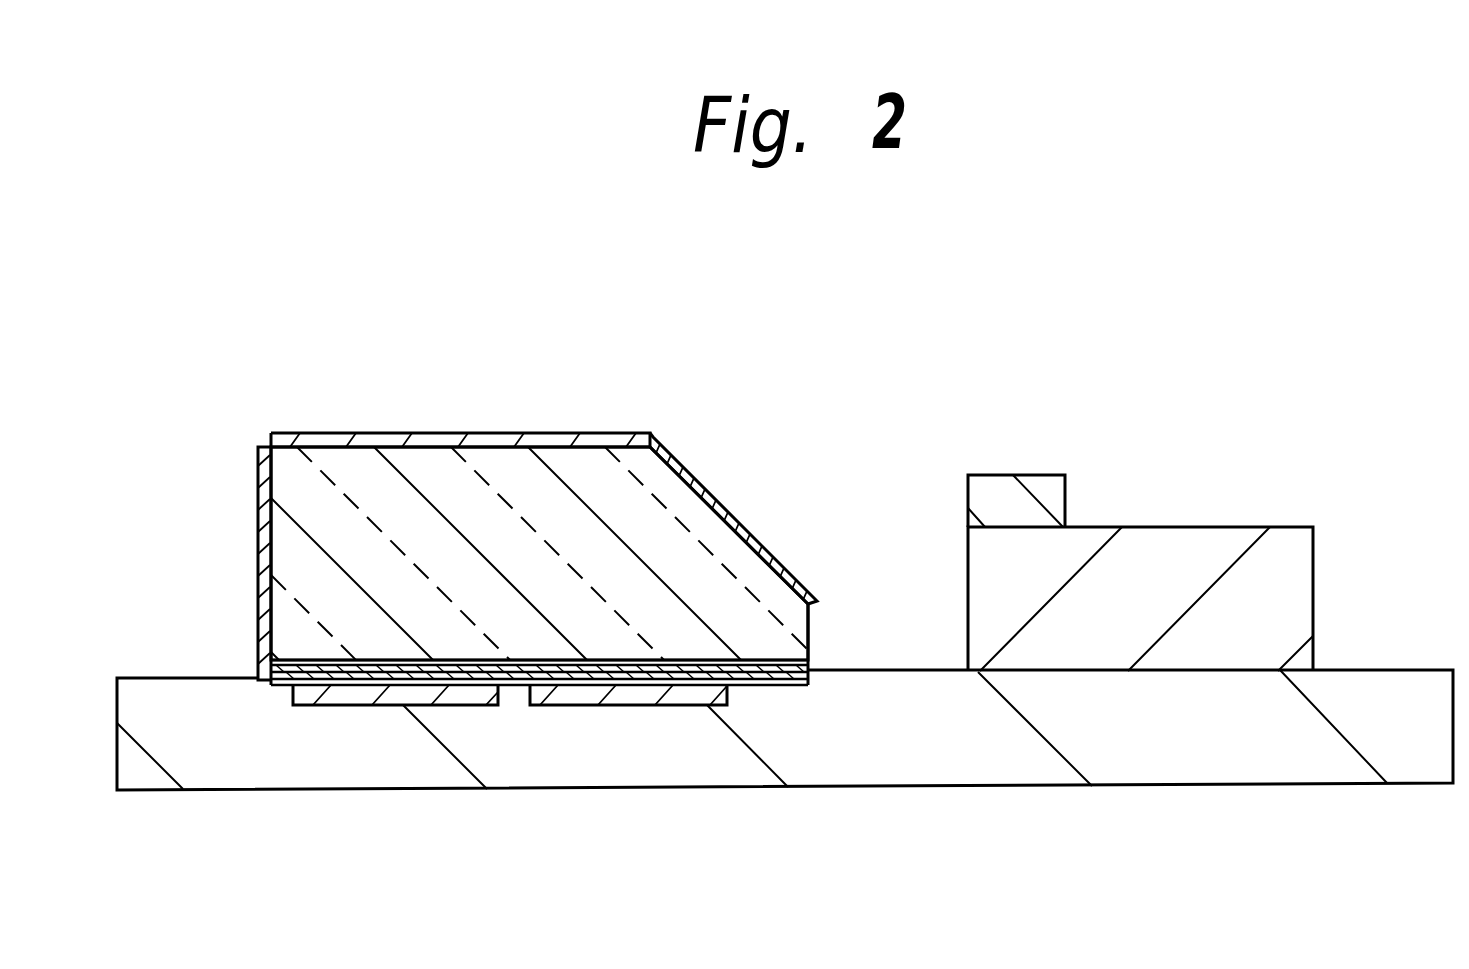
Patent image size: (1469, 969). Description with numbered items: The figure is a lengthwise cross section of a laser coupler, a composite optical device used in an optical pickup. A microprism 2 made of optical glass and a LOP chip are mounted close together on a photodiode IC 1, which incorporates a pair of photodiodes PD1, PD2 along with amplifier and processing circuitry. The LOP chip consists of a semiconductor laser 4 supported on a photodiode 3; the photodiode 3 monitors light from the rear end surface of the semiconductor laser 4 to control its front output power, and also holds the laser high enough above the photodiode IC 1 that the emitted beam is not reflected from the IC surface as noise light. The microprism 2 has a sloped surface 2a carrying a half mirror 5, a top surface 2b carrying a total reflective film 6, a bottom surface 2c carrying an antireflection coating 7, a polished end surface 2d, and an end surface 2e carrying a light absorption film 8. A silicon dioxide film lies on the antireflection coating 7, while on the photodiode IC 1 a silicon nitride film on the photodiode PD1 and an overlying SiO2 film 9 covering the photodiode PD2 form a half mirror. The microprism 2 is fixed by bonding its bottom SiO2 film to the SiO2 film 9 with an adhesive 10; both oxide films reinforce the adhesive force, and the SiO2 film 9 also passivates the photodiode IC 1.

The photodiode IC 1 is at (918, 765).
The microprism 2 is at (440, 462).
The sloped surface 2a is at (748, 528).
The top surface 2b is at (366, 446).
The bottom surface 2c is at (440, 662).
The end surface 2d is at (810, 627).
The end surface 2e is at (258, 586).
The photodiode 3 is at (1177, 547).
The semiconductor laser 4 is at (1001, 492).
The half mirror 5 is at (720, 500).
The total reflective film 6 is at (545, 433).
The antireflection coating 7 is at (508, 673).
The light absorption film 8 is at (258, 512).
The SiO2 film 9 is at (688, 681).
The adhesive 10 is at (592, 674).
The photodiode PD1 is at (653, 700).
The photodiode PD2 is at (358, 703).